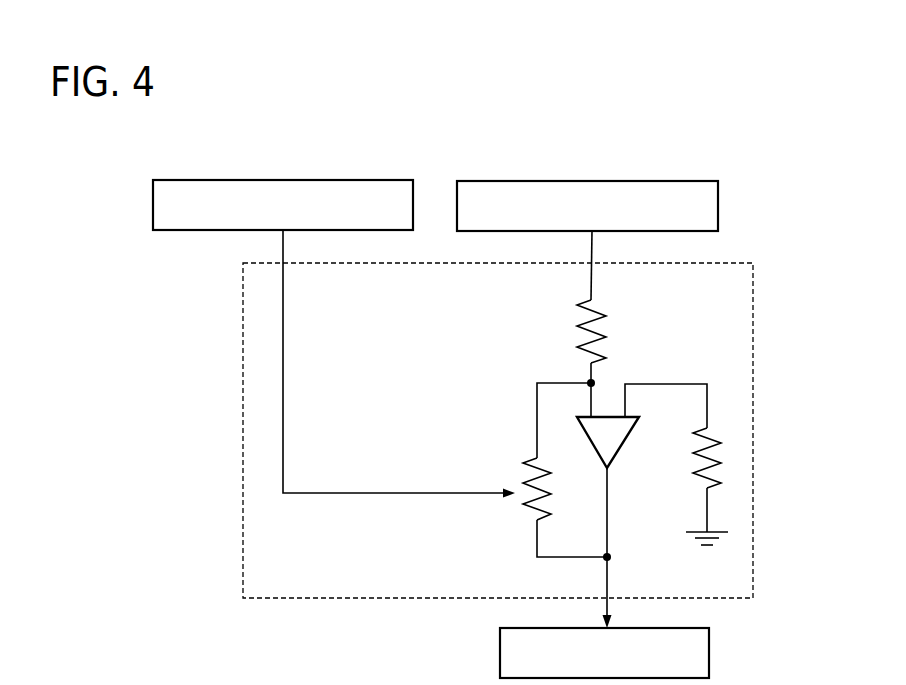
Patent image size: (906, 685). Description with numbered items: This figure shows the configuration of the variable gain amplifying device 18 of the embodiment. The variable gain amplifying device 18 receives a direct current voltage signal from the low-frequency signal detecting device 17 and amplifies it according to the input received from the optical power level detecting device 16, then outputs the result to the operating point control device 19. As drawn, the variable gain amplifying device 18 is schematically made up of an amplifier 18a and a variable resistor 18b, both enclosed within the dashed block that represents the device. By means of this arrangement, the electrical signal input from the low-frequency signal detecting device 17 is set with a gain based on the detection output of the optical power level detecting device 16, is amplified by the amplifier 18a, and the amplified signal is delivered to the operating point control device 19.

The optical power level detecting device 16 is at (331, 180).
The low-frequency signal detecting device 17 is at (659, 181).
The variable gain amplifying device 18 is at (740, 263).
The amplifier 18a is at (620, 447).
The variable resistor 18b is at (528, 507).
The operating point control device 19 is at (709, 652).